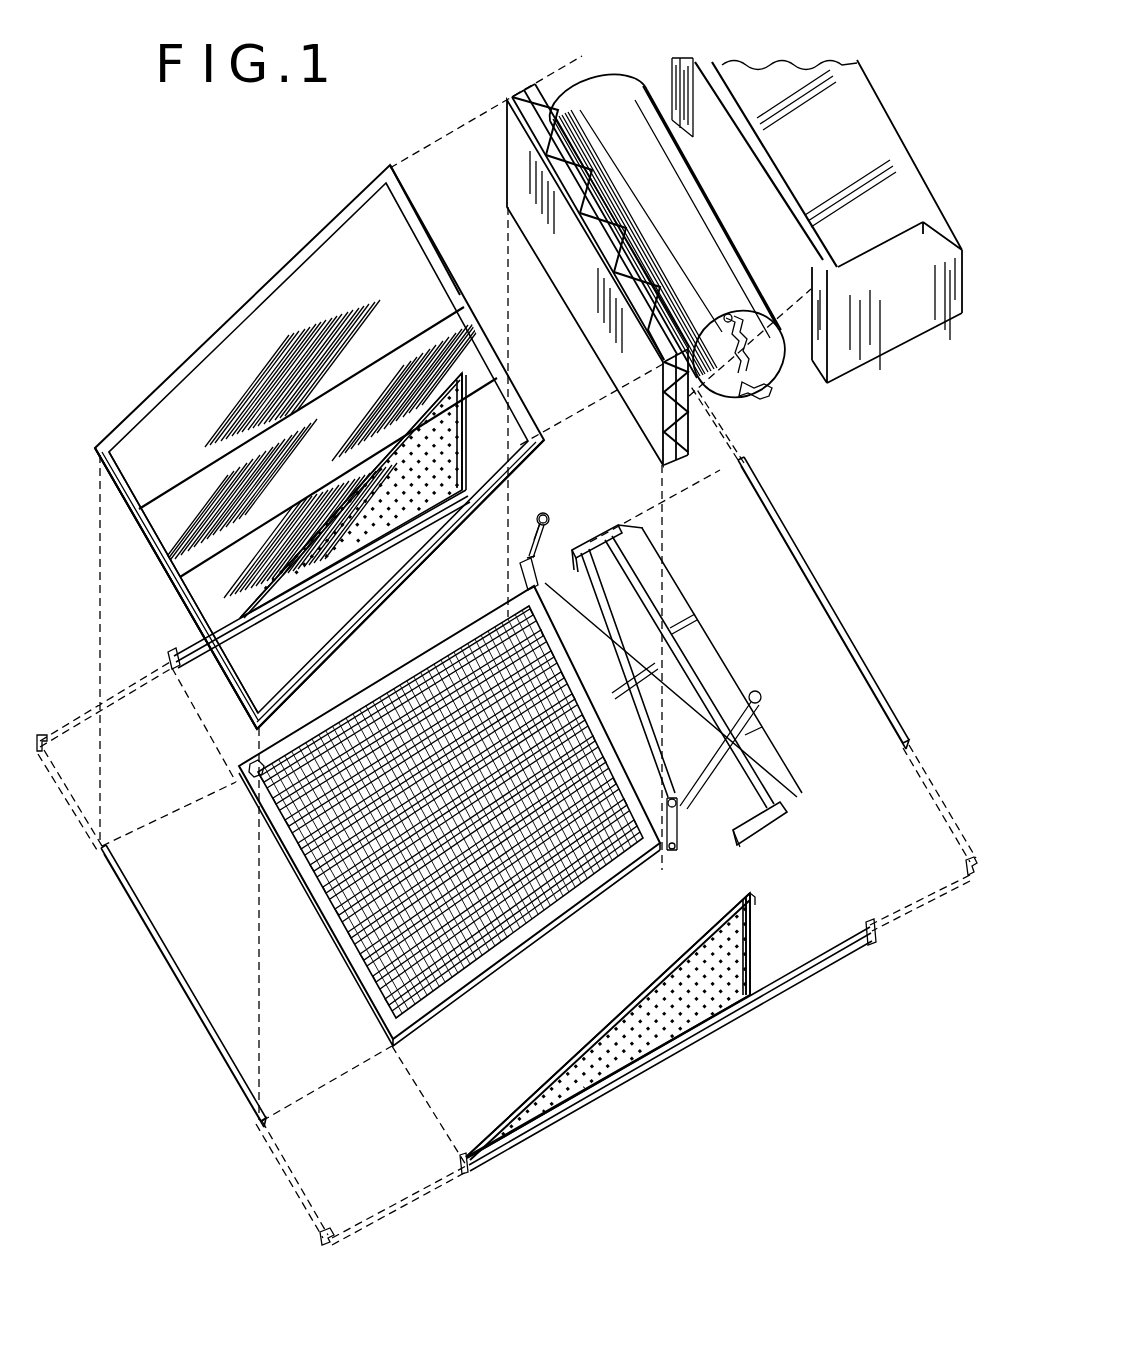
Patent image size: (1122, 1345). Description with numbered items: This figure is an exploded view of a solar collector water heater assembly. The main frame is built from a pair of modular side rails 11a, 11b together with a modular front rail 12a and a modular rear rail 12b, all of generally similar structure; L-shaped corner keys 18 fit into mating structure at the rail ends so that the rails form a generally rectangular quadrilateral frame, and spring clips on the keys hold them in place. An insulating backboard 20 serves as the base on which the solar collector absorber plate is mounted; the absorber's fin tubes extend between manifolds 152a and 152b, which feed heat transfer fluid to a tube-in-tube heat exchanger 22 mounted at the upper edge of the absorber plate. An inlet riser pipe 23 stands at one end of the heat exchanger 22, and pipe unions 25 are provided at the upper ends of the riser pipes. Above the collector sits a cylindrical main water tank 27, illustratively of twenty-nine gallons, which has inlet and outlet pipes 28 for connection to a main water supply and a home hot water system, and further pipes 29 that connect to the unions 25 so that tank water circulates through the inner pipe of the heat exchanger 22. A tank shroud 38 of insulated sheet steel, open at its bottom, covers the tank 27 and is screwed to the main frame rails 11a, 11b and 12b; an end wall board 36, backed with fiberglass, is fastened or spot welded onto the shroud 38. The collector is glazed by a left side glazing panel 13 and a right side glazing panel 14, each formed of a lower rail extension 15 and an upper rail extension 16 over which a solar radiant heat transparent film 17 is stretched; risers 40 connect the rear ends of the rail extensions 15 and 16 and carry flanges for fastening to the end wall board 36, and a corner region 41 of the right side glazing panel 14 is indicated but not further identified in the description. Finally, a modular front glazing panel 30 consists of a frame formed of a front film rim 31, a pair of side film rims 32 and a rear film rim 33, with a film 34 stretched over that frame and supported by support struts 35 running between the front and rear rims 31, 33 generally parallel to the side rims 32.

The modular side rail 11a is at (690, 1042).
The modular side rail 11b is at (178, 676).
The modular front rail 12a is at (182, 962).
The modular rear rail 12b is at (866, 665).
The left side glazing panel 13 is at (377, 534).
The right side glazing panel 14 is at (723, 996).
The lower rail extension 15 is at (465, 460).
The upper rail extension 16 is at (342, 500).
The solar radiant heat transparent film 17 is at (754, 951).
The L-shaped corner key 18 is at (325, 1226).
The insulating backboard 20 is at (593, 920).
The tube-in-tube heat exchanger 22 is at (597, 683).
The inlet riser pipe 23 is at (526, 546).
The pipe union 25 is at (544, 509).
The main water tank 27 is at (604, 78).
The inlet and outlet pipes 28 is at (766, 400).
The tank connecting pipes 29 is at (731, 340).
The modular front glazing panel 30 is at (236, 303).
The front film rim 31 is at (170, 588).
The side film rim 32 is at (160, 380).
The rear film rim 33 is at (412, 201).
The film 34 is at (163, 530).
The support strut 35 is at (311, 373).
The end wall board 36 is at (666, 478).
The tank shroud 38 is at (910, 322).
The riser 40 is at (470, 430).
The corner 41 is at (732, 906).
The manifold 152a is at (692, 848).
The manifold 152b is at (380, 1031).